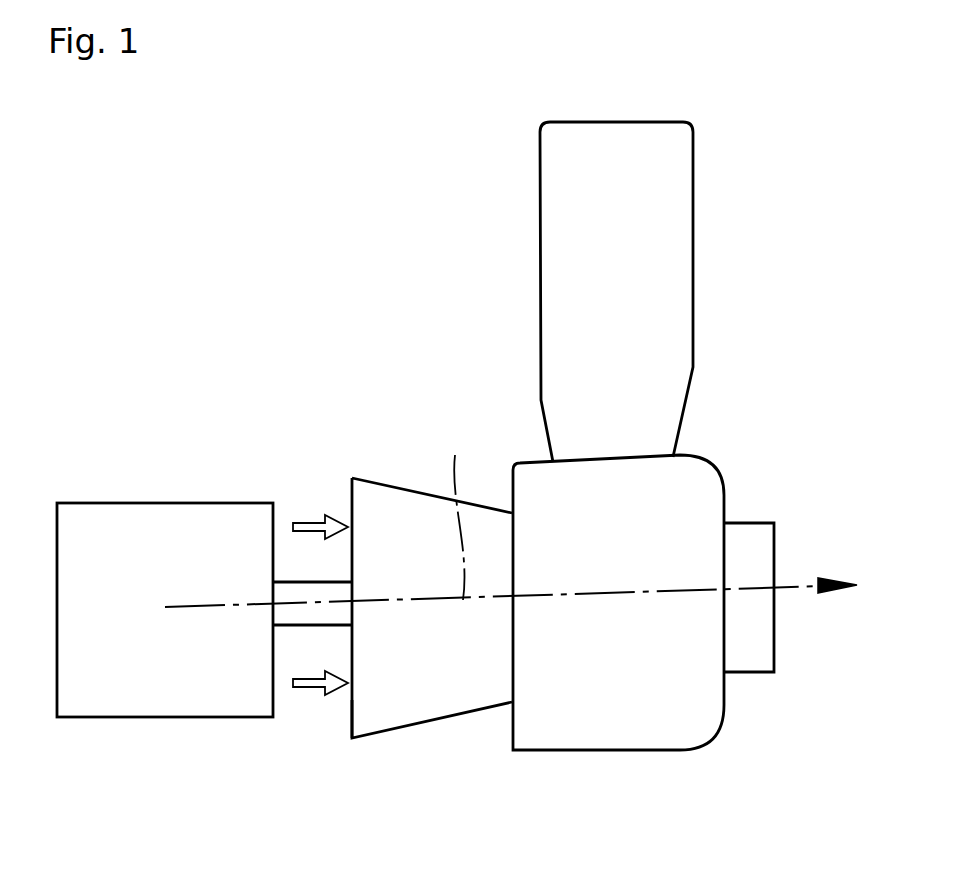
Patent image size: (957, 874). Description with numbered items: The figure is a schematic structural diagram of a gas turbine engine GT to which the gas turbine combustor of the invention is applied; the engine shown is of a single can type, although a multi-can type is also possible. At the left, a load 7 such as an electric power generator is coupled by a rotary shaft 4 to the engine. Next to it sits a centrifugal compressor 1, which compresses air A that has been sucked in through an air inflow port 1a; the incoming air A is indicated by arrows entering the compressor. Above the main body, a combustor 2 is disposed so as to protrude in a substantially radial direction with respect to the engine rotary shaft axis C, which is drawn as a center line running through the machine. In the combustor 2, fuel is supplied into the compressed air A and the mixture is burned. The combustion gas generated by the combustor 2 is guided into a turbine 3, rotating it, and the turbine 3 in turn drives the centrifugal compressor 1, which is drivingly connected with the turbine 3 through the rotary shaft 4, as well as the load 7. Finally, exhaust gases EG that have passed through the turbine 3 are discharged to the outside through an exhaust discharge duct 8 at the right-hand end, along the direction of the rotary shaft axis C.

The centrifugal compressor 1 is at (385, 517).
The air inflow port 1a is at (343, 722).
The combustor 2 is at (665, 245).
The turbine 3 is at (673, 503).
The rotary shaft 4 is at (300, 618).
The load 7 is at (168, 532).
The exhaust discharge duct 8 is at (753, 653).
The air A is at (317, 517).
The engine rotary shaft axis C is at (455, 503).
The gas turbine engine GT is at (743, 437).
The exhaust gases EG is at (807, 592).